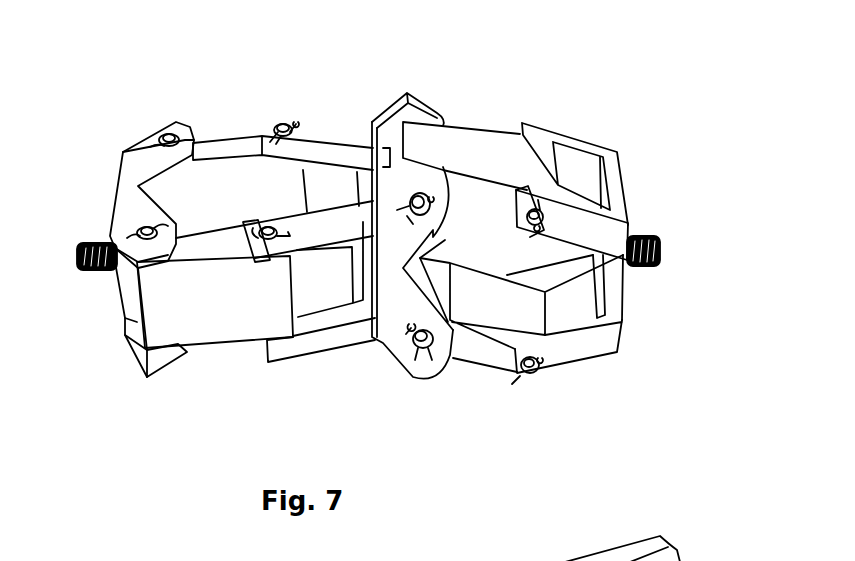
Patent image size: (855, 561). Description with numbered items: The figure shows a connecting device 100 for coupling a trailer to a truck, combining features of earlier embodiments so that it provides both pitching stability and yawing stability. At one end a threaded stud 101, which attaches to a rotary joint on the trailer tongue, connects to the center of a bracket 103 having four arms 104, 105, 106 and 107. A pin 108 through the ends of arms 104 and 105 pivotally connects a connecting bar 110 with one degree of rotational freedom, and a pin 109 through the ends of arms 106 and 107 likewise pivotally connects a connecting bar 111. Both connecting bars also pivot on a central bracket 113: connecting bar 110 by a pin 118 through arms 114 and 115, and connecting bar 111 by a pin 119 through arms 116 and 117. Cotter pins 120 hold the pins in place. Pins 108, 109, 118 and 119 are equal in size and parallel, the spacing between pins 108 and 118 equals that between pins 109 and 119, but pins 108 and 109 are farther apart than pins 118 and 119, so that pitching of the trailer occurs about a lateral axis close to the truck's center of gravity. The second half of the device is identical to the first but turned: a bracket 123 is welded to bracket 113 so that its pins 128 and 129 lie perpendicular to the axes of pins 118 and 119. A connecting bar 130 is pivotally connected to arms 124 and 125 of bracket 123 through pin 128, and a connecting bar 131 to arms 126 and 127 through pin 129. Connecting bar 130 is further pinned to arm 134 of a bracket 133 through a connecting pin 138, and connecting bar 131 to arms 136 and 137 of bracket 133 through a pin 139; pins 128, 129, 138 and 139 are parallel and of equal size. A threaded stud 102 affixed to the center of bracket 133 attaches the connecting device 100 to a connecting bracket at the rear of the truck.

The connecting device 100 is at (674, 115).
The threaded stud 101 is at (663, 243).
The threaded stud 102 is at (82, 275).
The bracket 103 is at (615, 290).
The arm 104 is at (588, 172).
The arm 105 is at (597, 233).
The arm 106 is at (567, 287).
The arm 107 is at (593, 353).
The pin 108 is at (537, 217).
The pin 109 is at (537, 373).
The connecting bar 110 is at (470, 135).
The connecting bar 111 is at (490, 353).
The bracket 113 is at (388, 332).
The arm 114 is at (407, 107).
The arm 115 is at (413, 177).
The arm 116 is at (437, 250).
The arm 117 is at (437, 377).
The pin 118 is at (440, 178).
The pin 119 is at (420, 350).
The cotter pin 120 is at (297, 120).
The bracket 123 is at (360, 300).
The arm 124 is at (327, 140).
The arm 125 is at (338, 250).
The arm 126 is at (307, 220).
The arm 127 is at (305, 350).
The pin 128 is at (278, 128).
The pin 129 is at (267, 226).
The connecting bar 130 is at (222, 148).
The connecting bar 131 is at (223, 327).
The bracket 133 is at (130, 302).
The arm 134 is at (142, 147).
The arm 136 is at (125, 215).
The arm 137 is at (137, 363).
The connecting pin 138 is at (167, 133).
The pin 139 is at (147, 228).